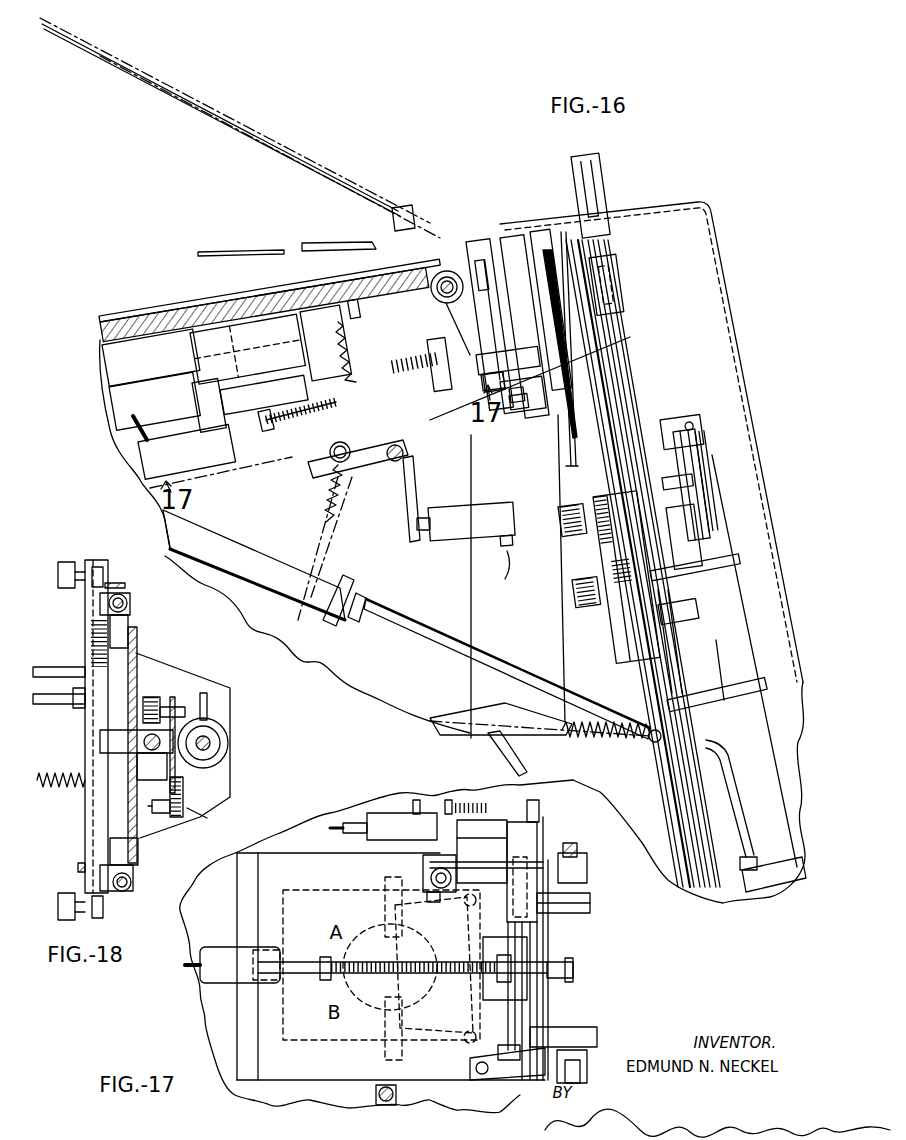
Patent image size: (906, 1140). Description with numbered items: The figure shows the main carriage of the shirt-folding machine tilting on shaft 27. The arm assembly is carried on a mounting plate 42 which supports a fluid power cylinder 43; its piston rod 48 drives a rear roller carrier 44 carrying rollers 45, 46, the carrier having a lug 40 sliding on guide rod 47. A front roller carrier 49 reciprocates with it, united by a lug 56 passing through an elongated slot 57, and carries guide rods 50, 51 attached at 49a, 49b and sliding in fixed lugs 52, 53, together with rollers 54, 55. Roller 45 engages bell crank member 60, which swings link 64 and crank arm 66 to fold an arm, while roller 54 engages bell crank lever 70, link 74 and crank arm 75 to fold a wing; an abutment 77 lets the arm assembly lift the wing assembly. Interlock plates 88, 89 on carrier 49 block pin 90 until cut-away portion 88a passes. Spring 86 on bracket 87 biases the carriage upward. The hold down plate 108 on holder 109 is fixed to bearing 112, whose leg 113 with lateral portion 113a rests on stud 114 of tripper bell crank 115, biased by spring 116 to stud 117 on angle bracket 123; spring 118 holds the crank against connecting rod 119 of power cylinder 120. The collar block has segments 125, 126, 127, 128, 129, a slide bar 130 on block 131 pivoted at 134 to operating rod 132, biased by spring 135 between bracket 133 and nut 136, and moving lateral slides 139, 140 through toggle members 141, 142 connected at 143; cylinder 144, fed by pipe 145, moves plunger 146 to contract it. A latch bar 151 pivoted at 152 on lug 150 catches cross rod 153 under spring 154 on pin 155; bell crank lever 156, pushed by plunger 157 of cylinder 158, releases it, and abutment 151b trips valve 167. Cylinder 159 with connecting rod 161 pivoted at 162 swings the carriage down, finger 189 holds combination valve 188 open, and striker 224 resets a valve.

In FIG. 16, the shaft 27 is at (440, 272).
In FIG. 16, the lug 40 is at (698, 473).
In FIG. 18, the lug 40 is at (178, 752).
In FIG. 16, the mounting plate 42 is at (612, 382).
In FIG. 18, the mounting plate 42 is at (136, 654).
In FIG. 16, the fluid power cylinder 43 is at (750, 668).
In FIG. 18, the fluid power cylinder 43 is at (227, 735).
In FIG. 16, the rear roller carrier 44 is at (694, 490).
In FIG. 18, the rear roller carrier 44 is at (173, 697).
In FIG. 16, the roller 45 is at (652, 440).
In FIG. 16, the roller 46 is at (698, 512).
In FIG. 18, the roller 46 is at (158, 697).
In FIG. 18, the guide rod 47 is at (212, 749).
In FIG. 16, the piston rod 48 is at (707, 527).
In FIG. 16, the front roller carrier 49 is at (617, 613).
In FIG. 18, the front roller carrier 49 is at (87, 637).
In FIG. 18, the attachment point 49a is at (114, 892).
In FIG. 18, the attachment point 49b is at (125, 594).
In FIG. 18, the guide rod 50 is at (132, 883).
In FIG. 18, the guide rod 51 is at (128, 603).
In FIG. 18, the fixed lugs 52 is at (126, 864).
In FIG. 18, the fixed lugs 53 is at (126, 621).
In FIG. 16, the roller 54 is at (557, 522).
In FIG. 18, the roller 54 is at (62, 905).
In FIG. 16, the roller 55 is at (570, 597).
In FIG. 18, the roller 55 is at (63, 561).
In FIG. 16, the lug 56 is at (688, 622).
In FIG. 18, the lug 56 is at (100, 733).
In FIG. 18, the elongated slot 57 is at (144, 744).
In FIG. 16, the bell crank member 60 is at (636, 391).
In FIG. 16, the link 64 is at (603, 249).
In FIG. 16, the crank arm 66 is at (597, 194).
In FIG. 16, the bell crank lever 70 is at (500, 425).
In FIG. 16, the link 74 is at (504, 341).
In FIG. 16, the crank arm 75 is at (478, 250).
In FIG. 17, the abutment 77 is at (500, 1075).
In FIG. 16, the spring 86 is at (620, 737).
In FIG. 16, the bracket 87 is at (708, 706).
In FIG. 16, the interlock plate 88 is at (515, 248).
In FIG. 16, the cut-away portion 88a is at (548, 368).
In FIG. 18, the interlock plate 89 is at (113, 582).
In FIG. 16, the pin 90 is at (545, 309).
In FIG. 16, the hold down plate 108 is at (324, 243).
In FIG. 16, the holder plate 109 is at (243, 250).
In FIG. 17, the holder plate 109 is at (315, 889).
In FIG. 17, the bearing 112 is at (547, 997).
In FIG. 16, the leg 113 is at (364, 322).
In FIG. 17, the leg 113 is at (497, 827).
In FIG. 17, the laterally extending portion 113a is at (590, 904).
In FIG. 16, the stud 114 is at (372, 358).
In FIG. 16, the tripper bell crank 115 is at (365, 415).
In FIG. 16, the spring 116 is at (424, 354).
In FIG. 16, the stud 117 is at (470, 370).
In FIG. 17, the stud 117 is at (437, 842).
In FIG. 16, the spring 118 is at (300, 360).
In FIG. 16, the connecting rod 119 is at (311, 408).
In FIG. 16, the power cylinder 120 is at (313, 372).
In FIG. 17, the angle bracket 123 is at (424, 858).
In FIG. 17, the segment 125 is at (337, 954).
In FIG. 17, the segment 126 is at (363, 928).
In FIG. 17, the segment 127 is at (370, 1010).
In FIG. 17, the segment 128 is at (427, 921).
In FIG. 17, the segment 129 is at (427, 1000).
In FIG. 17, the slide bar 130 is at (300, 957).
In FIG. 17, the block 131 is at (390, 967).
In FIG. 16, the operating rod 132 is at (484, 413).
In FIG. 17, the operating rod 132 is at (550, 966).
In FIG. 16, the bracket 133 is at (467, 372).
In FIG. 17, the bracket 133 is at (547, 1010).
In FIG. 17, the pivotal connection 134 is at (578, 1035).
In FIG. 16, the spring 135 is at (297, 430).
In FIG. 17, the spring 135 is at (453, 962).
In FIG. 17, the nut 136 is at (325, 980).
In FIG. 17, the lateral slide 139 is at (400, 1023).
In FIG. 17, the lateral slide 140 is at (380, 898).
In FIG. 17, the bell crank toggle member 141 is at (437, 1043).
In FIG. 17, the bell crank toggle member 142 is at (387, 888).
In FIG. 17, the operating connection 143 is at (477, 977).
In FIG. 16, the fluid power cylinder 144 is at (187, 451).
In FIG. 17, the fluid power cylinder 144 is at (233, 970).
In FIG. 16, the pipe 145 is at (133, 416).
In FIG. 17, the pipe 145 is at (185, 967).
In FIG. 17, the plunger 146 is at (290, 974).
In FIG. 16, the lug 150 is at (573, 373).
In FIG. 16, the latch bar 151 is at (463, 437).
In FIG. 16, the abutment 151b is at (403, 440).
In FIG. 16, the pivot 152 is at (528, 439).
In FIG. 16, the frame cross rod 153 is at (400, 464).
In FIG. 16, the spring 154 is at (336, 515).
In FIG. 16, the pin 155 is at (330, 468).
In FIG. 16, the bell crank lever 156 is at (370, 466).
In FIG. 16, the plunger 157 is at (420, 517).
In FIG. 16, the fluid power cylinder 158 is at (472, 540).
In FIG. 16, the fluid power cylinder 159 is at (241, 552).
In FIG. 16, the connecting rod 161 is at (407, 630).
In FIG. 16, the pivot 162 is at (655, 744).
In FIG. 16, the valve 167 is at (403, 413).
In FIG. 16, the combination valve 188 is at (723, 548).
In FIG. 18, the combination valve 188 is at (168, 815).
In FIG. 18, the finger 189 is at (190, 812).
In FIG. 16, the striker 224 is at (522, 770).